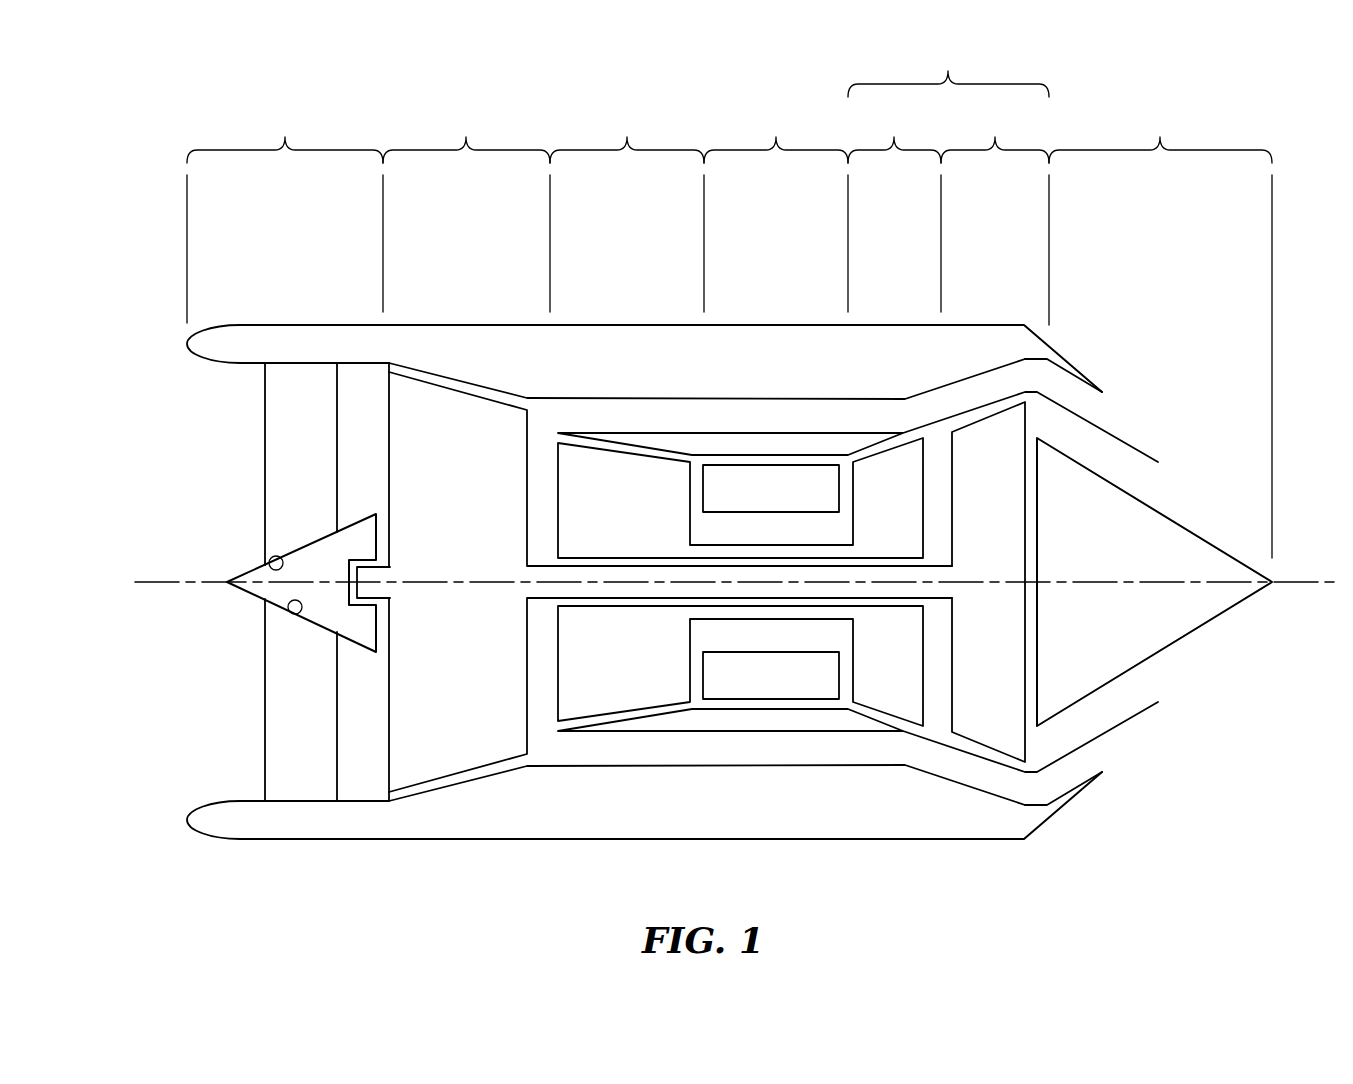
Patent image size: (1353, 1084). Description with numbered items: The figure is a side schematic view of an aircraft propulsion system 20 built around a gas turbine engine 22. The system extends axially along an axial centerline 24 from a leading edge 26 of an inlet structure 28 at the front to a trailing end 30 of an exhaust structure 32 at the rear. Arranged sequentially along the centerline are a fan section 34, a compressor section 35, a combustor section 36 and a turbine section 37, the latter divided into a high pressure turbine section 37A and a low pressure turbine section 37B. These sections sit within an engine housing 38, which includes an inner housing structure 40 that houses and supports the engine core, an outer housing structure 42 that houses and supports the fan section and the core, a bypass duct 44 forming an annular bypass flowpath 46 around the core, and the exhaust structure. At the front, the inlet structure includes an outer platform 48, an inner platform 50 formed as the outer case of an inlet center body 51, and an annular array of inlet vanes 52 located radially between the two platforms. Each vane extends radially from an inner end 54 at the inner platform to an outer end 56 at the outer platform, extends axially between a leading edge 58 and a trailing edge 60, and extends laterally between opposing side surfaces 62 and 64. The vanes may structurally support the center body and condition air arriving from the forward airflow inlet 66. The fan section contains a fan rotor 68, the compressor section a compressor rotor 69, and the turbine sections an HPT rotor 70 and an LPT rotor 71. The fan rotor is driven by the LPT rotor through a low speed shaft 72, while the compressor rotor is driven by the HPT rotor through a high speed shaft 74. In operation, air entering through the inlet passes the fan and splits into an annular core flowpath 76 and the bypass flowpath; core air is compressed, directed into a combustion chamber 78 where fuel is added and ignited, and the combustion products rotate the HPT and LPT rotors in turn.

The aircraft propulsion system 20 is at (140, 135).
The gas turbine engine 22 is at (278, 818).
The axial centerline 24 is at (1330, 597).
The leading edge 26 is at (187, 344).
The inlet structure 28 is at (285, 214).
The trailing end 30 is at (1275, 580).
The exhaust structure 32 is at (1160, 332).
The fan section 34 is at (466, 209).
The compressor section 35 is at (627, 209).
The combustor section 36 is at (776, 209).
The turbine section 37 is at (948, 68).
The high pressure turbine (HPT) section 37A is at (894, 209).
The low pressure turbine (LPT) section 37B is at (995, 215).
The engine housing 38 is at (352, 845).
The inner housing structure 40 is at (673, 718).
The outer housing structure 42 is at (402, 842).
The bypass duct 44 is at (787, 768).
The bypass flowpath 46 is at (1078, 398).
The outer platform 48 is at (253, 798).
The inner platform 50 is at (242, 590).
The inlet center body 51 is at (297, 540).
The inlet vanes 52 is at (265, 472).
The inner end 54 is at (270, 563).
The outer end 56 is at (289, 360).
The leading edge 58 is at (265, 418).
The trailing edge 60 is at (337, 443).
The side surface 62 is at (300, 464).
The side surface 64 is at (300, 714).
The airflow inlet 66 is at (160, 737).
The fan rotor 68 is at (670, 582).
The compressor rotor 69 is at (740, 582).
The HPT rotor 70 is at (884, 523).
The LPT rotor 71 is at (988, 582).
The low speed shaft 72 is at (937, 600).
The high speed shaft 74 is at (718, 610).
The core flowpath 76 is at (1133, 472).
The combustion chamber 78 is at (771, 582).